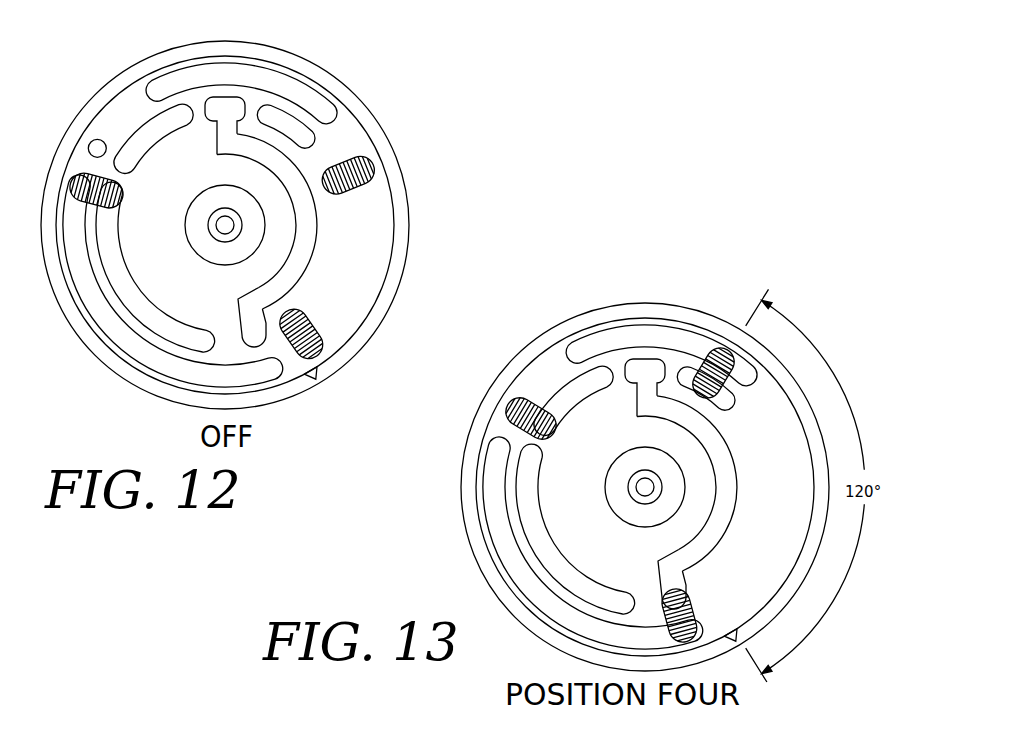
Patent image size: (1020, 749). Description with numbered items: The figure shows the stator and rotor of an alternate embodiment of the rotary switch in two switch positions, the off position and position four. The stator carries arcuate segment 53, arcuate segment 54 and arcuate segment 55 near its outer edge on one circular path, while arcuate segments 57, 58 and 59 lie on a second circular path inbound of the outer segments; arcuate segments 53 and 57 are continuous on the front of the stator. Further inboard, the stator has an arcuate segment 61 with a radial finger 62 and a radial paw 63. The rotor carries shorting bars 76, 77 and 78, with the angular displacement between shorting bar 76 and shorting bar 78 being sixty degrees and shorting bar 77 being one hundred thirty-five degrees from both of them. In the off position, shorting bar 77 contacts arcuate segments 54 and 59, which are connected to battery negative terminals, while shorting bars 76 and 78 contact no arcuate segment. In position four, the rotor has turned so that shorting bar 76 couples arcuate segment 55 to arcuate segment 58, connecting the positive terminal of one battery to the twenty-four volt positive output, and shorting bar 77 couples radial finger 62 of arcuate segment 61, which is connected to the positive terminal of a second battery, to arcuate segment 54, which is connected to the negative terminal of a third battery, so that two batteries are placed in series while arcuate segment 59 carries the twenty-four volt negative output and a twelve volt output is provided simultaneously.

In FIG. 12, the arcuate segment 53 is at (265, 80).
In FIG. 13, the arcuate segment 53 is at (638, 330).
In FIG. 12, the arcuate segment 54 is at (83, 282).
In FIG. 13, the arcuate segment 54 is at (502, 542).
In FIG. 12, the arcuate segment 55 is at (93, 144).
In FIG. 13, the arcuate segment 55 is at (512, 398).
In FIG. 12, the arcuate segment 57 is at (302, 138).
In FIG. 13, the arcuate segment 57 is at (727, 400).
In FIG. 12, the arcuate segment 58 is at (133, 158).
In FIG. 13, the arcuate segment 58 is at (558, 408).
In FIG. 12, the arcuate segment 59 is at (113, 238).
In FIG. 13, the arcuate segment 59 is at (533, 497).
In FIG. 12, the arcuate segment 61 is at (314, 245).
In FIG. 13, the arcuate segment 61 is at (732, 495).
In FIG. 12, the radial finger 62 is at (250, 330).
In FIG. 13, the radial finger 62 is at (668, 580).
In FIG. 12, the radial paw 63 is at (232, 113).
In FIG. 13, the radial paw 63 is at (647, 370).
In FIG. 12, the shorting bar 76 is at (351, 187).
In FIG. 13, the shorting bar 76 is at (505, 415).
In FIG. 12, the shorting bar 77 is at (85, 183).
In FIG. 13, the shorting bar 77 is at (685, 614).
In FIG. 12, the shorting bar 78 is at (313, 322).
In FIG. 13, the shorting bar 78 is at (718, 358).